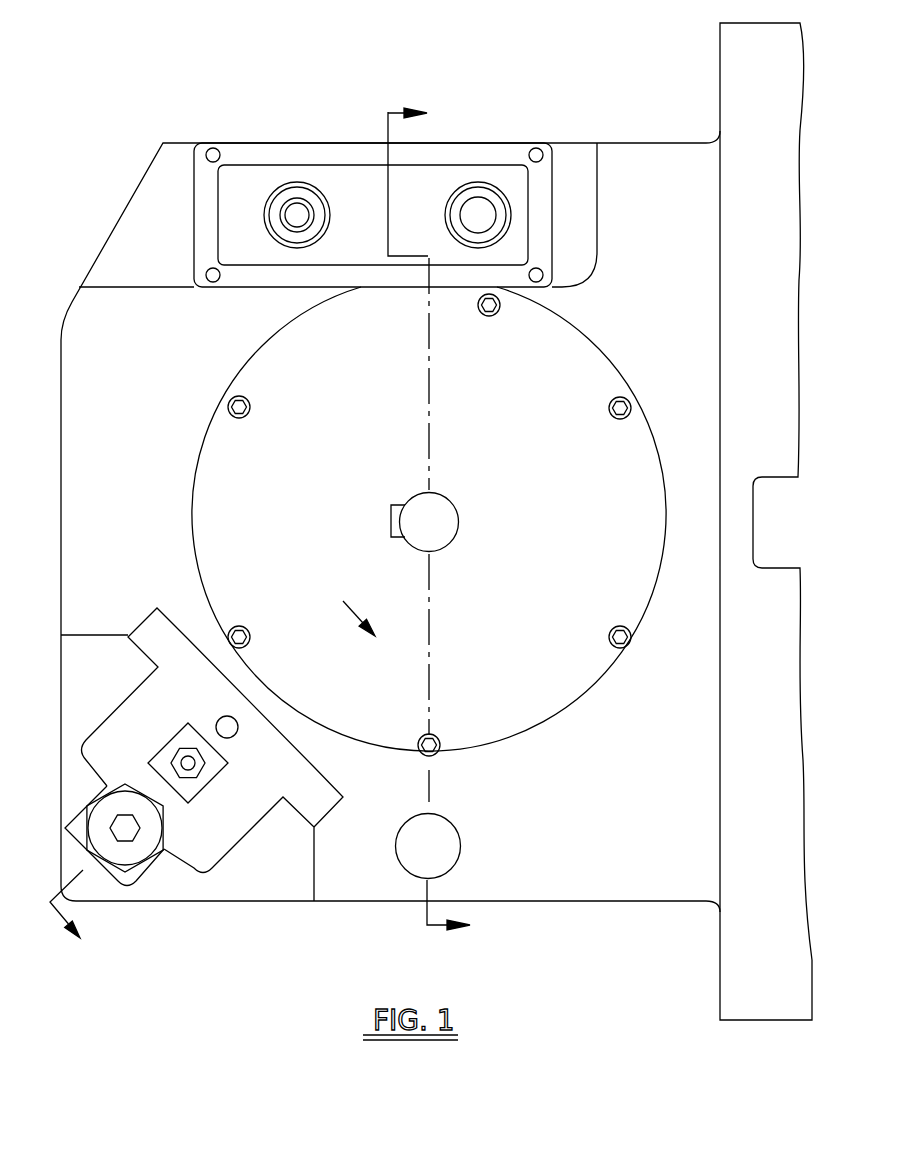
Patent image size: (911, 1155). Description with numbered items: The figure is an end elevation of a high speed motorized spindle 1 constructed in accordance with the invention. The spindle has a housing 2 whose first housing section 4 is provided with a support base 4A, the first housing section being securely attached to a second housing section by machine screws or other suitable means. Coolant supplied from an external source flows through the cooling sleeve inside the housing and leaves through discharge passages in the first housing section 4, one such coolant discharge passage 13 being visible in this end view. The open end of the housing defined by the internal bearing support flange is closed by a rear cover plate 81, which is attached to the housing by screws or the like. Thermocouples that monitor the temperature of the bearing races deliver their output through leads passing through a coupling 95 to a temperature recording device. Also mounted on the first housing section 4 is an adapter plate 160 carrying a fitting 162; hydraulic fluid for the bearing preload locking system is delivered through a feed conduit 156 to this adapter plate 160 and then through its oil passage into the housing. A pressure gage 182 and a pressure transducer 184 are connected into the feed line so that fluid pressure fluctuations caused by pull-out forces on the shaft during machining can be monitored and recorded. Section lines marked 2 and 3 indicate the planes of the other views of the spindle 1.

The high speed motorized spindle 1 is at (441, 116).
The housing 2 is at (425, 519).
The section line 3- 3 is at (206, 757).
The first housing section 4 is at (103, 298).
The support base 4A is at (730, 44).
The coolant discharge passage 13 is at (450, 842).
The rear cover plate 81 is at (536, 604).
The coupling 95 is at (296, 213).
The feed conduit 156 is at (135, 833).
The adapter plate 160 is at (139, 754).
The fitting 162 is at (112, 853).
The pressure gage 182 is at (233, 735).
The pressure transducer 184 is at (192, 770).